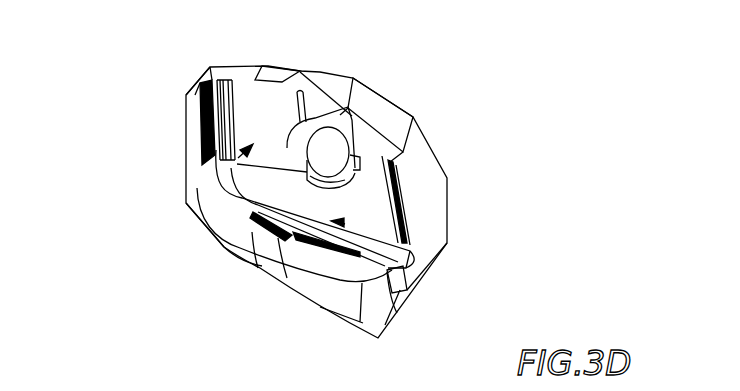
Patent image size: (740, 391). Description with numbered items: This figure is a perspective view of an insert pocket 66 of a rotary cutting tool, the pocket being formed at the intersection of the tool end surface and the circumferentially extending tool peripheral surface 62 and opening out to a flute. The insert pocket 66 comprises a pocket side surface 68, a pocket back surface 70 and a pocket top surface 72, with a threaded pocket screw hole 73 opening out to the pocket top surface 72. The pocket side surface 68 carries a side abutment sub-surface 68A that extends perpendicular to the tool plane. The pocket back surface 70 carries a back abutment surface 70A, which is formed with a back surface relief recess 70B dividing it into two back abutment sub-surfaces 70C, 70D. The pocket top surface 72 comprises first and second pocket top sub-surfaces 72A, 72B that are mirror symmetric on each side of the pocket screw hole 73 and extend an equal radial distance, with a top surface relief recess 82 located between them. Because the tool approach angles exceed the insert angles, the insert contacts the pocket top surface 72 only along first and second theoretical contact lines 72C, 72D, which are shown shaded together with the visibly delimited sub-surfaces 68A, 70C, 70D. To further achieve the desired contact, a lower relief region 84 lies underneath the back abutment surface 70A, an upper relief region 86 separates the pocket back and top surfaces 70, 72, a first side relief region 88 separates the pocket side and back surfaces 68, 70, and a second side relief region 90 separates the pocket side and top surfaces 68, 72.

The tool peripheral surface 62 is at (435, 192).
The insert pocket 66 is at (190, 241).
The pocket side surface 68 is at (216, 196).
The side abutment sub-surface 68A is at (195, 127).
The pocket back surface 70 is at (362, 270).
The back abutment surface 70A is at (332, 265).
The back surface relief recess 70B is at (296, 242).
The back abutment sub-surface 70C is at (262, 258).
The back abutment sub-surface 70D is at (318, 232).
The pocket top surface 72 is at (210, 155).
The first pocket top sub-surface 72A is at (368, 150).
The second pocket top sub-surface 72B is at (303, 72).
The first theoretical contact line 72C is at (403, 155).
The second theoretical contact line 72D is at (185, 95).
The pocket screw hole 73 is at (345, 222).
The top surface relief recess 82 is at (353, 78).
The lower relief region 84 is at (400, 288).
The upper relief region 86 is at (414, 270).
The first side relief region 88 is at (200, 203).
The second side relief region 90 is at (210, 66).